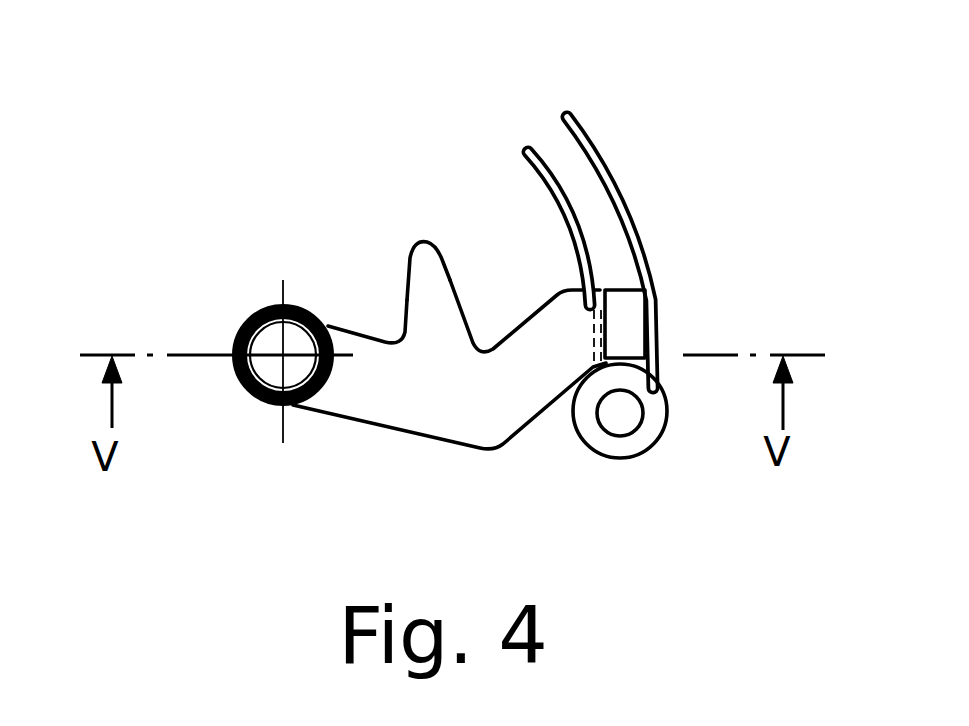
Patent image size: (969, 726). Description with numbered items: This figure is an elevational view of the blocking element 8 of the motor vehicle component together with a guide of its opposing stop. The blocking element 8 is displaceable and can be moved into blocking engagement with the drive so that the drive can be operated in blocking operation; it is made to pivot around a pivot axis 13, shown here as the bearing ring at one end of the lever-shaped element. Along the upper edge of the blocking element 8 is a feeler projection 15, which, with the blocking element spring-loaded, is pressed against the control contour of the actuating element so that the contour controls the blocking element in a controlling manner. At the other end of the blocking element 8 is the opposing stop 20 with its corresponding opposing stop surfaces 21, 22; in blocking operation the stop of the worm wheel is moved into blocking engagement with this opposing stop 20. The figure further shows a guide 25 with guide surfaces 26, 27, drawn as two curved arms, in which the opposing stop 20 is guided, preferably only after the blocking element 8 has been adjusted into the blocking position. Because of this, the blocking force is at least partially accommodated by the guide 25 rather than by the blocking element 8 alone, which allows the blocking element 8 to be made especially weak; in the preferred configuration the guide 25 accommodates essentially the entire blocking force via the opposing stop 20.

The blocking element 8 is at (385, 395).
The pivot axis 13 is at (283, 353).
The feeler projection 15 is at (432, 287).
The opposing stop 20 is at (618, 300).
The opposing stop surface 21 is at (595, 338).
The opposing stop surface 22 is at (658, 297).
The guide 25 is at (595, 194).
The guide surface 26 is at (565, 200).
The guide surface 27 is at (617, 210).